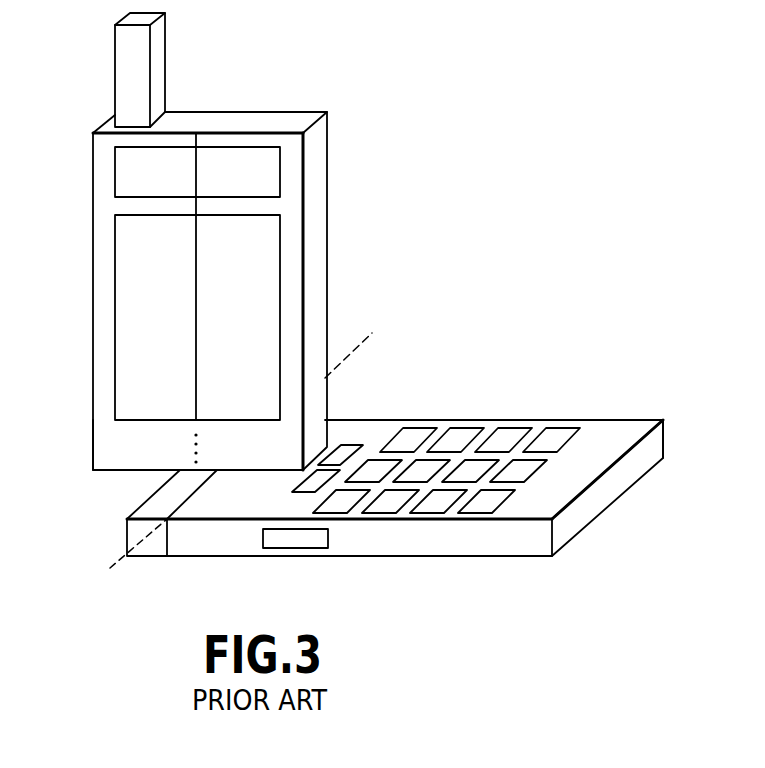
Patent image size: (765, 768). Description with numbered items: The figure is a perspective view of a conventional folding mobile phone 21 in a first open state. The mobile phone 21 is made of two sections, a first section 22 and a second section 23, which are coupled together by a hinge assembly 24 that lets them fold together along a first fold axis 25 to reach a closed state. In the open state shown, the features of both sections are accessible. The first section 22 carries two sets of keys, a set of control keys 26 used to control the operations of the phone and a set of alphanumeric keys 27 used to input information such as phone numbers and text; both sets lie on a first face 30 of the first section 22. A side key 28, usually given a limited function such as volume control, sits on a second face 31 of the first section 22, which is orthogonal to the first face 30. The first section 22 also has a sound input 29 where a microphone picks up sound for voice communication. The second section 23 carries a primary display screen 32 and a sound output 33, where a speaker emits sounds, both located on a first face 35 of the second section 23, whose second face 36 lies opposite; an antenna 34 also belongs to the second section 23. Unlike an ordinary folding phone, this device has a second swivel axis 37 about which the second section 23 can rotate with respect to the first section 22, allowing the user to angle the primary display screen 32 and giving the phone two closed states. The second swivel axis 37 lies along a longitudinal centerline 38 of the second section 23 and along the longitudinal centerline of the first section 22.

The mobile phone 21 is at (400, 92).
The first section 22 is at (607, 477).
The second section 23 is at (313, 128).
The hinge assembly 24 is at (148, 511).
The first fold axis 25 is at (365, 340).
The set of control keys 26 is at (395, 403).
The set of alphanumeric keys 27 is at (578, 403).
The side key 28 is at (283, 547).
The sound input 29 is at (605, 438).
The first face 30 is at (220, 508).
The second face 31 is at (447, 548).
The primary display screen 32 is at (268, 253).
The sound output 33 is at (273, 163).
The antenna 34 is at (122, 60).
The first face 35 is at (103, 422).
The second face 36 is at (290, 87).
The second swivel axis 37 is at (192, 453).
The longitudinal centerline 38 is at (197, 200).